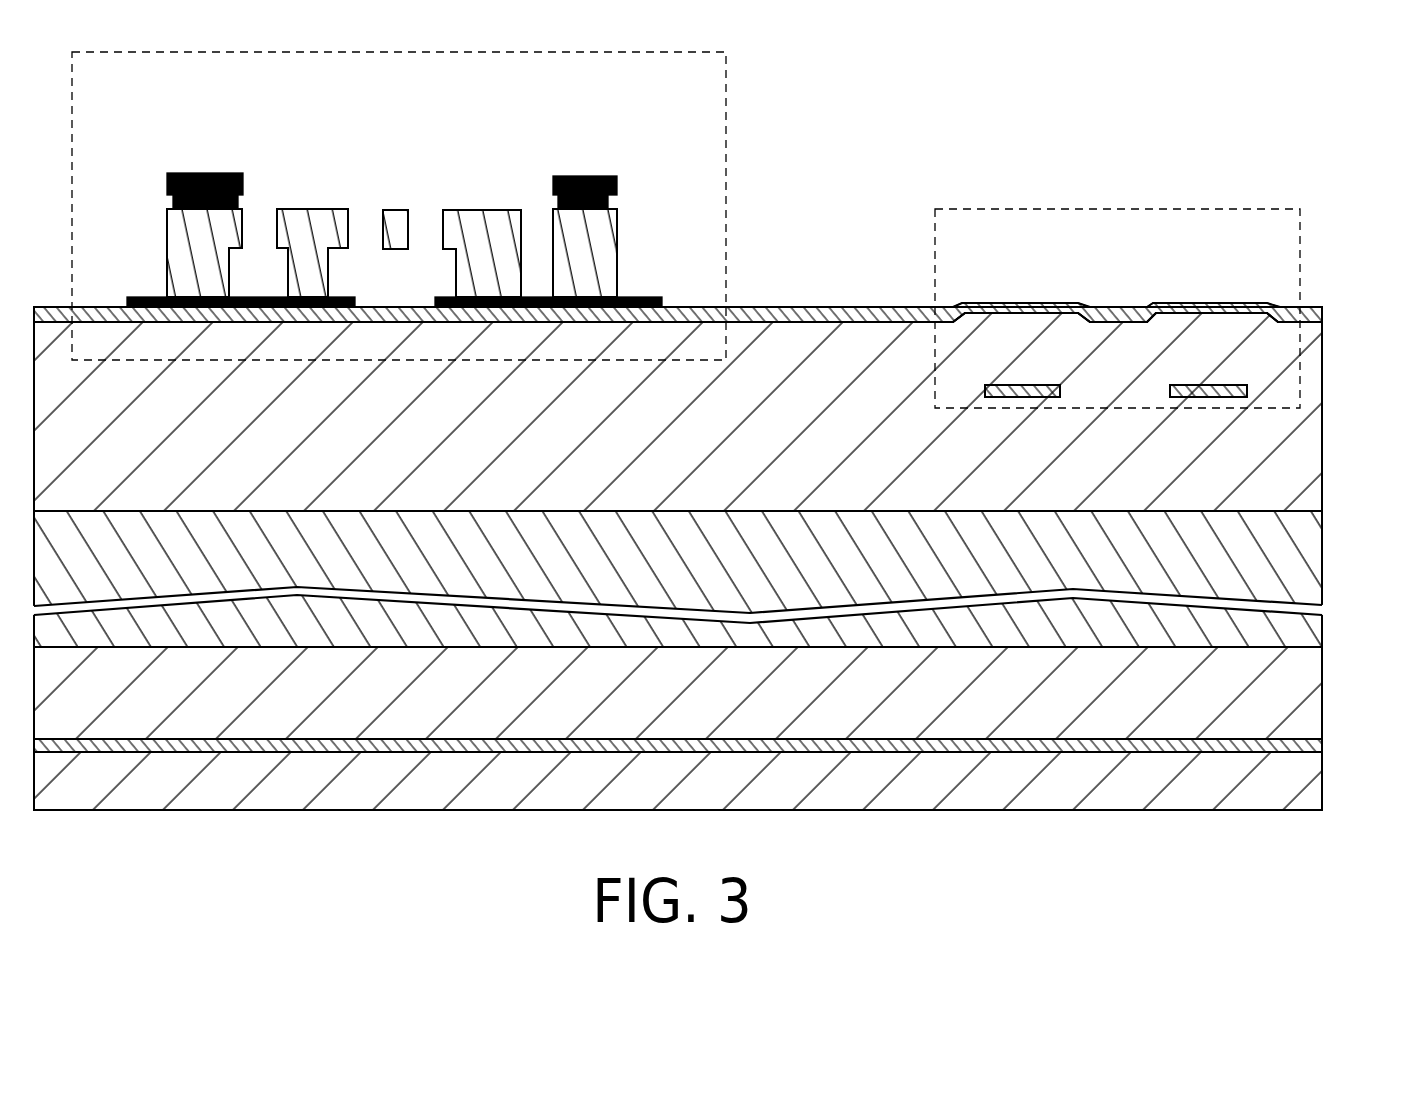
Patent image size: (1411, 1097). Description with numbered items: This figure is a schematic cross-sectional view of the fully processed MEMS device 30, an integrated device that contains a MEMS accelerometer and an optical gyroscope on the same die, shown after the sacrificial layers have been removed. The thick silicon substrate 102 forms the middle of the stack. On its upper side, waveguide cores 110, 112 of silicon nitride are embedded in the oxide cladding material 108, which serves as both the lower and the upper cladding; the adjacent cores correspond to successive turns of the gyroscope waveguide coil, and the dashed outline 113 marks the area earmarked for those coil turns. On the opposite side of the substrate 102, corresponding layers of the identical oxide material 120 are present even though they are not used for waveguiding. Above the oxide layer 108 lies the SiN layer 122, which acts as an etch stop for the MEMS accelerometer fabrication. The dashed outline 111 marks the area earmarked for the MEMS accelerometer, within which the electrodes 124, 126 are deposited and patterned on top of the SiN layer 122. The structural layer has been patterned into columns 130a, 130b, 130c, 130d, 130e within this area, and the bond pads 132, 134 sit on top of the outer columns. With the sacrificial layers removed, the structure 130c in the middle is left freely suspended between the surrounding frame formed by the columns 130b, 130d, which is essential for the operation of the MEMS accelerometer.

The MEMS device 30 is at (755, 88).
The substrate 102 is at (1312, 563).
The material of upper and lower claddings 108 is at (1328, 322).
The waveguide core 110 is at (1020, 385).
The dashed outline for MEMS accelerometer area 111 is at (607, 52).
The waveguide core 112 is at (1215, 385).
The dashed outline for optical gyroscope coil area 113 is at (988, 209).
The material of layers on other side of substrate 120 is at (1328, 647).
The SiN layer 122 is at (1322, 312).
The electrode 124 is at (538, 297).
The electrode 126 is at (260, 297).
The column 130a is at (178, 225).
The column 130b is at (332, 210).
The suspending structure 130c is at (395, 210).
The column 130d is at (473, 210).
The column 130e is at (610, 222).
The bond pad 132 is at (193, 174).
The bond pad 134 is at (608, 176).